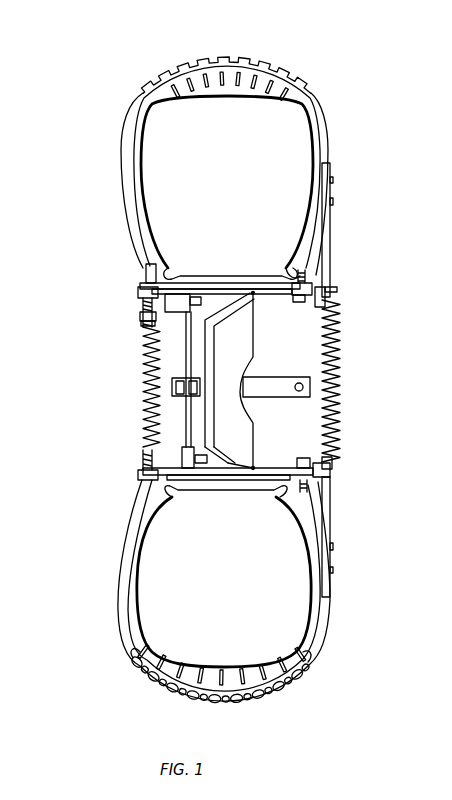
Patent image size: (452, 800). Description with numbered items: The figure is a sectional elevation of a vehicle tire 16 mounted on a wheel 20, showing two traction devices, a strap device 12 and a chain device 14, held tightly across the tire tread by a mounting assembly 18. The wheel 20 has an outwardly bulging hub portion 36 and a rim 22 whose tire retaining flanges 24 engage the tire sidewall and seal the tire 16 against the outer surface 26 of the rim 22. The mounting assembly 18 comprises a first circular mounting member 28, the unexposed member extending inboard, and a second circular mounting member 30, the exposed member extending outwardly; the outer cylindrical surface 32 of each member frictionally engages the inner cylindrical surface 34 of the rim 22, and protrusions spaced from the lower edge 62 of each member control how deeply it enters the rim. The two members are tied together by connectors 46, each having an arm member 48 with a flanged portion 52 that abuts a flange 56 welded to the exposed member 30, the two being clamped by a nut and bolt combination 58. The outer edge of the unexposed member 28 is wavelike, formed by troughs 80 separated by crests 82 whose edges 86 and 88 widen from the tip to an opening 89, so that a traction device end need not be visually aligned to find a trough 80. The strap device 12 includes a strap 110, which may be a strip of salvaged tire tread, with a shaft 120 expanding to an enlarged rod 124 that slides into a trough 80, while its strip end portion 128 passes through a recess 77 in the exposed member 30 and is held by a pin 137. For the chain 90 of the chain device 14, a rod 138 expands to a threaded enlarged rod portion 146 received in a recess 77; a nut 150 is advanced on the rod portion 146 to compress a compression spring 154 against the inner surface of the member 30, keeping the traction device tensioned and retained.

The strap device 12 is at (227, 150).
The chain device 14 is at (207, 598).
The vehicle tire 16 is at (287, 113).
The mounting assembly 18 is at (246, 372).
The wheel 20 is at (243, 332).
The rim 22 is at (167, 270).
The tire retaining flanges 24 is at (148, 268).
The outer surface 26 is at (208, 281).
The first circular mounting member 28 is at (370, 378).
The second circular mounting member 30 is at (165, 418).
The outer cylindrical surface 32 is at (147, 502).
The inner cylindrical surface 34 is at (222, 281).
The hub portion 36 is at (207, 337).
The connectors 46 is at (253, 296).
The arm member 48 is at (268, 382).
The flanged portion 52 is at (192, 297).
The flange 56 is at (138, 308).
The nut and bolt combination 58 is at (173, 450).
The lower edge 62 is at (188, 355).
The recesses 77 is at (148, 385).
The troughs 80 is at (330, 372).
The crests 82 is at (335, 367).
The crest edge 86 is at (343, 317).
The crest edge 88 is at (335, 330).
The opening 89 is at (330, 418).
The chain 90 is at (170, 695).
The strap 110 is at (177, 67).
The shaft 120 is at (365, 372).
The enlarged rod 124 is at (332, 242).
The strip end portion 128 is at (130, 528).
The pin 137 is at (140, 473).
The rod 138 is at (133, 248).
The enlarged rod portion 146 is at (145, 287).
The nut 150 is at (143, 323).
The compression spring 154 is at (147, 312).